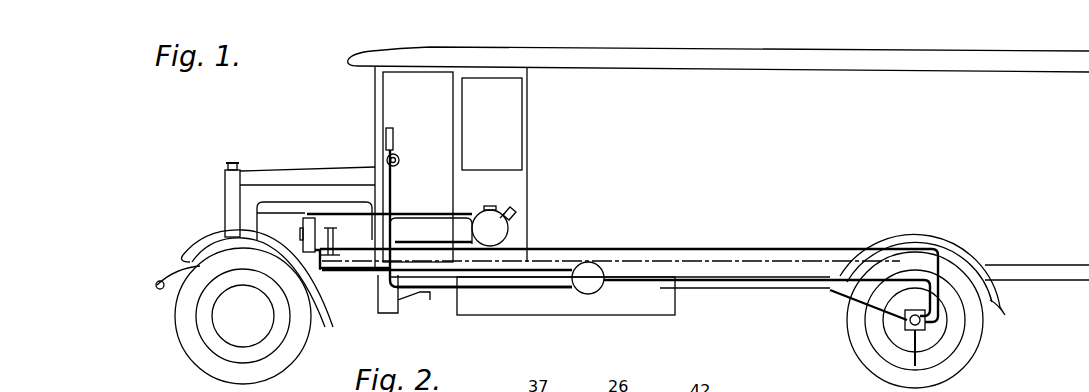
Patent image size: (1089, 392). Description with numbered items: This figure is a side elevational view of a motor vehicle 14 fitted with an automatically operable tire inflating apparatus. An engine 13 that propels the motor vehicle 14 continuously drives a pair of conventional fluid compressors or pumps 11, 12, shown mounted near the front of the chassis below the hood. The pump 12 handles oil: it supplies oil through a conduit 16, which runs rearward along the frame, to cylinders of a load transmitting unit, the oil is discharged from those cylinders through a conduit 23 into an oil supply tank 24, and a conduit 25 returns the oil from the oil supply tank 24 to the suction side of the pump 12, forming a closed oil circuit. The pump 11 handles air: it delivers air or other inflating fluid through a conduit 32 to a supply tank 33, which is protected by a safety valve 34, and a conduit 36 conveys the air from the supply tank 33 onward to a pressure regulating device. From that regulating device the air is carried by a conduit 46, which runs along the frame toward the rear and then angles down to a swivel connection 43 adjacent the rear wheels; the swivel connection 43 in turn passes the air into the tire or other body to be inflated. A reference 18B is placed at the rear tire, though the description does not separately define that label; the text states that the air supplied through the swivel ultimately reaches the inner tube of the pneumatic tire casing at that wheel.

The motor vehicle 14 is at (687, 83).
The engine 13 is at (340, 207).
The pump 11 is at (300, 232).
The pump 12 is at (335, 234).
The conduit 32 is at (421, 214).
The conduit 36 is at (433, 242).
The supply tank 33 is at (506, 229).
The safety valve 34 is at (510, 207).
The conduit 16 is at (579, 249).
The oil supply tank 24 is at (600, 267).
The conduit 23 is at (742, 280).
The conduit 25 is at (490, 290).
The conduit 46 is at (749, 290).
The swivel connection 43 is at (905, 322).
The body rear portion 18B is at (975, 353).